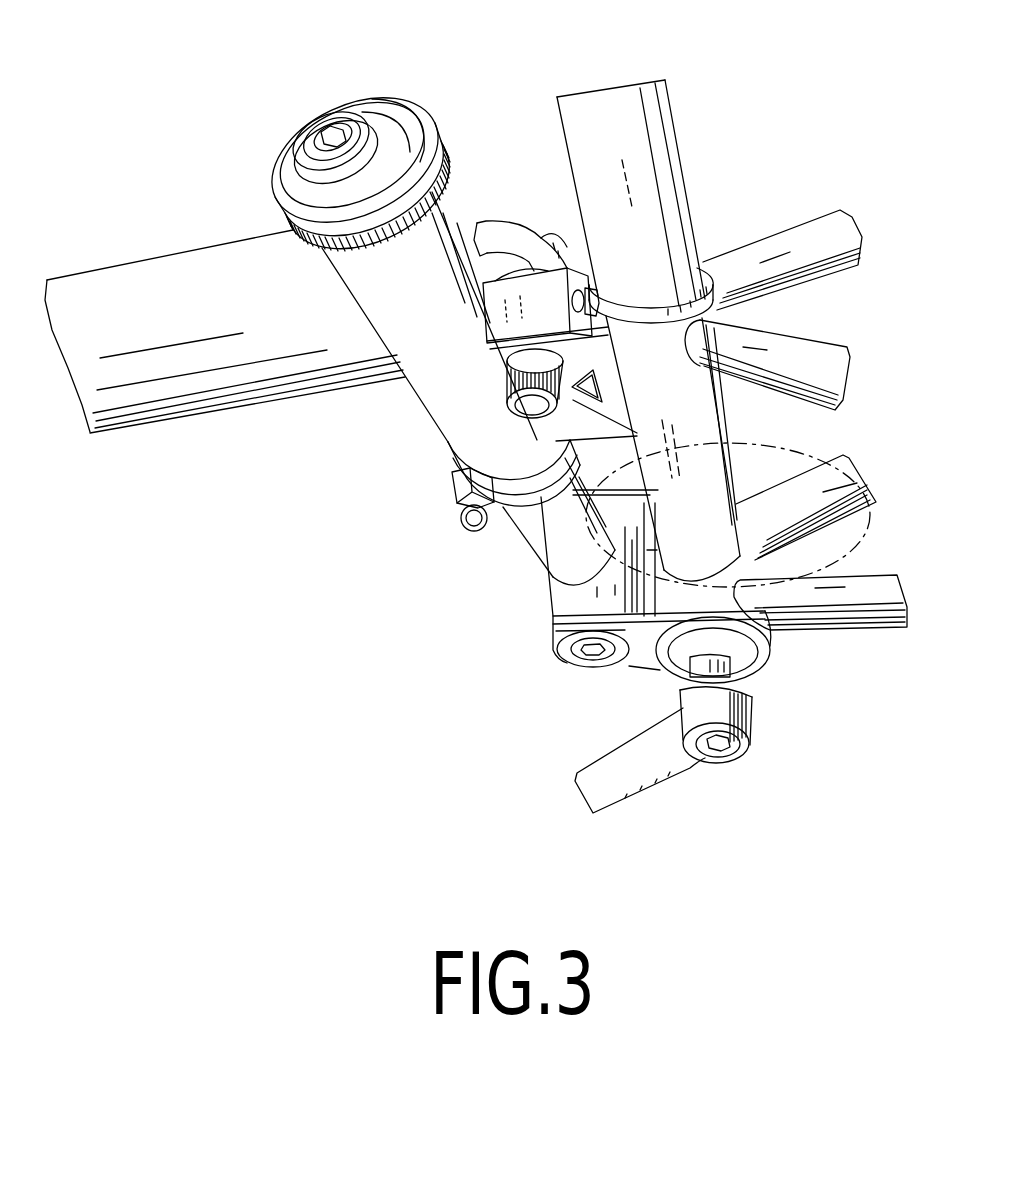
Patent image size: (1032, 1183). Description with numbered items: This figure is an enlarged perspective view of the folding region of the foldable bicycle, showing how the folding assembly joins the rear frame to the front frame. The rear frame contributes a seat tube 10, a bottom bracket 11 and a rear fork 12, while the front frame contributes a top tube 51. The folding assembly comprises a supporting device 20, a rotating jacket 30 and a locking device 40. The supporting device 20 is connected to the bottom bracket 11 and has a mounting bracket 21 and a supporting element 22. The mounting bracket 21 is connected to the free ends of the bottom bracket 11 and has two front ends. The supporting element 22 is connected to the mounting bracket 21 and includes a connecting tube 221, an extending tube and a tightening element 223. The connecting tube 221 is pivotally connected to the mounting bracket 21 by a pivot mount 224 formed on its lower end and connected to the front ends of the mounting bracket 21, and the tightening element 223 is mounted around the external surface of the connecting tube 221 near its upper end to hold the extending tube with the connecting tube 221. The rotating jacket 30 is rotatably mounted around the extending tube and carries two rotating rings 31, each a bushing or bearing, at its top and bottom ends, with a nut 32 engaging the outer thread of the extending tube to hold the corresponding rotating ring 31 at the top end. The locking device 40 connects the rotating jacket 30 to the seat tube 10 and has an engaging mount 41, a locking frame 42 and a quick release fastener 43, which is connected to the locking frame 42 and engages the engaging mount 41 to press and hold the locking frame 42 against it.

The seat tube 10 is at (668, 162).
The bottom bracket 11 is at (756, 540).
The rear fork 12 is at (801, 345).
The supporting device 20 is at (452, 564).
The mounting bracket 21 is at (637, 663).
The supporting element 22 is at (514, 547).
The connecting tube 221 is at (583, 531).
The tightening element 223 is at (450, 487).
The pivot mount 224 is at (560, 603).
The rotating jacket 30 is at (387, 306).
The rotating ring 31 is at (450, 455).
The nut 32 is at (312, 256).
The locking device 40 is at (503, 93).
The engaging mount 41 is at (540, 436).
The locking frame 42 is at (620, 411).
The quick release fastener 43 is at (518, 210).
The top tube 51 is at (134, 283).